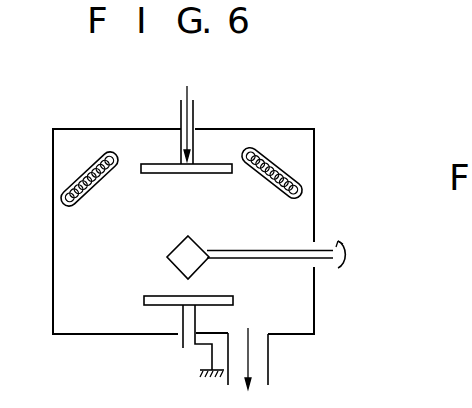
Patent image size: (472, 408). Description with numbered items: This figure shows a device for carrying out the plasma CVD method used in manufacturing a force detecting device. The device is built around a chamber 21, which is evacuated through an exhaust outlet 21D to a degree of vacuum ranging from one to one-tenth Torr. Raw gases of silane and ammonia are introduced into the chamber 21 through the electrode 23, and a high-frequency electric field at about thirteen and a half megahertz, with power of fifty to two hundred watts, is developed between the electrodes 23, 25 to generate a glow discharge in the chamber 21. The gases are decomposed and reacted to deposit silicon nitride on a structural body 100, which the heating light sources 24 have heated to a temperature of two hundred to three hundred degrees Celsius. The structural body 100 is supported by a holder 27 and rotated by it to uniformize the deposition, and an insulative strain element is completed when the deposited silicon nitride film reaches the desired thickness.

The chamber 21 is at (315, 153).
The exhaust outlet 21D is at (269, 358).
The electrode 23 is at (180, 140).
The heating light sources 24 is at (98, 185).
The electrode 25 is at (182, 320).
The holder 27 is at (262, 259).
The structural body 100 is at (176, 268).